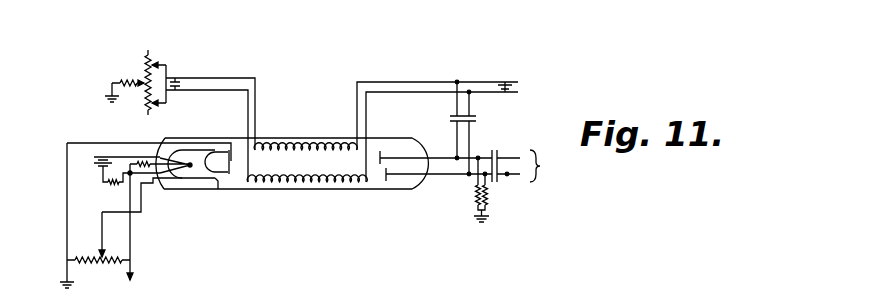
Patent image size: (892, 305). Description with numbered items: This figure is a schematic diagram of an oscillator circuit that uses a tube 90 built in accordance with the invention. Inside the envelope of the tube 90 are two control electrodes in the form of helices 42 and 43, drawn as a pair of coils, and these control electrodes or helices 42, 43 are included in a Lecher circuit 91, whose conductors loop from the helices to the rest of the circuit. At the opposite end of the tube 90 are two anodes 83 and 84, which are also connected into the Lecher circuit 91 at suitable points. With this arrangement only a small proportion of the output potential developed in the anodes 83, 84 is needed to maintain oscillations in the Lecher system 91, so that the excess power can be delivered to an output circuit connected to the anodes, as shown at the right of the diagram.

The Lecher circuit 91 is at (215, 78).
The tube 90 is at (276, 138).
The control electrode 42 is at (314, 149).
The control electrode 43 is at (299, 184).
The anode 83 is at (381, 150).
The anode 84 is at (386, 182).